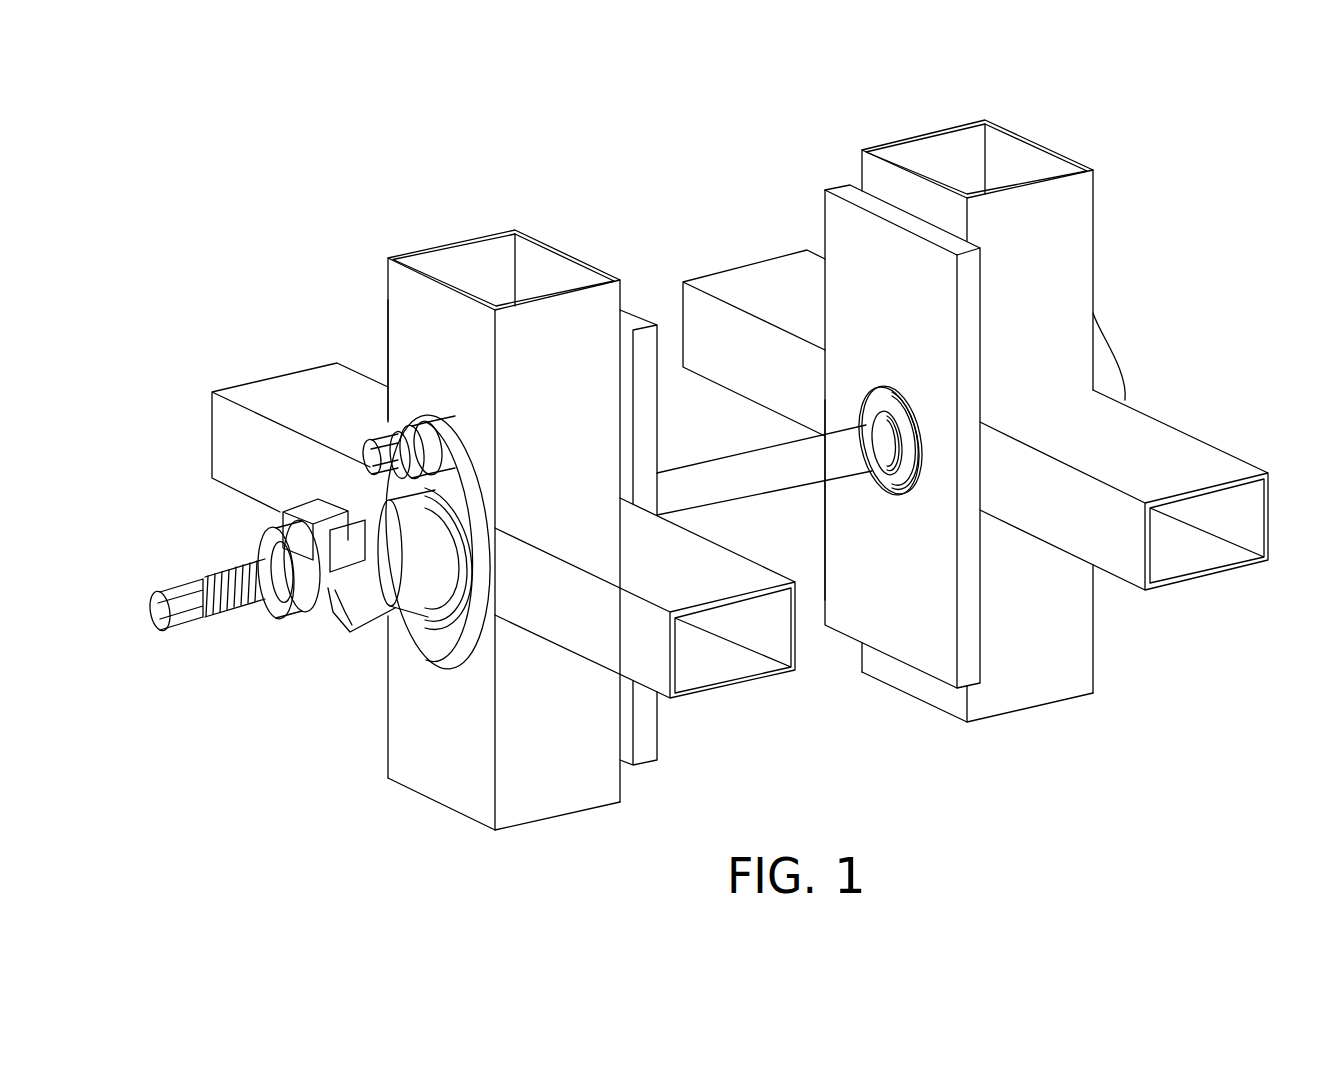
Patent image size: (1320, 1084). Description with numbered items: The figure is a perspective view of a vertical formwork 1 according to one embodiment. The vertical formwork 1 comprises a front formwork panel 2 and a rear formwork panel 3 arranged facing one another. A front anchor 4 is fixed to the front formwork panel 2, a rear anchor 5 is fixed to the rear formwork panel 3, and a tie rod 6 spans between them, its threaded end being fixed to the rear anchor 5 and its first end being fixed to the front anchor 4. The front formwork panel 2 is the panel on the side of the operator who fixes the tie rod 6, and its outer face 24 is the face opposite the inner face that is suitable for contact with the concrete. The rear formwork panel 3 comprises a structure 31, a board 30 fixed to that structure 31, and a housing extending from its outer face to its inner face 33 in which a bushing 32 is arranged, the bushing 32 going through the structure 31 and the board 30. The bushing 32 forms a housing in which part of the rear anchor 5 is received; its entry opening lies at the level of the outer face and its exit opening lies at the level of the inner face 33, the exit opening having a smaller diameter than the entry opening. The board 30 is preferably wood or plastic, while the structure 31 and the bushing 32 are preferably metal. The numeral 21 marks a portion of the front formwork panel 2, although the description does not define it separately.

The vertical formwork 1 is at (669, 200).
The front formwork panel 2 is at (374, 308).
The rear formwork panel 3 is at (1106, 229).
The front anchor 4 is at (404, 671).
The rear anchor 5 is at (1127, 370).
The tie rod 6 is at (173, 590).
The column front face 21 is at (433, 775).
The outer face 24 is at (457, 375).
The board 30 is at (840, 197).
The structure 31 is at (1072, 683).
The bushing 32 is at (893, 492).
The inner face 33 is at (897, 302).